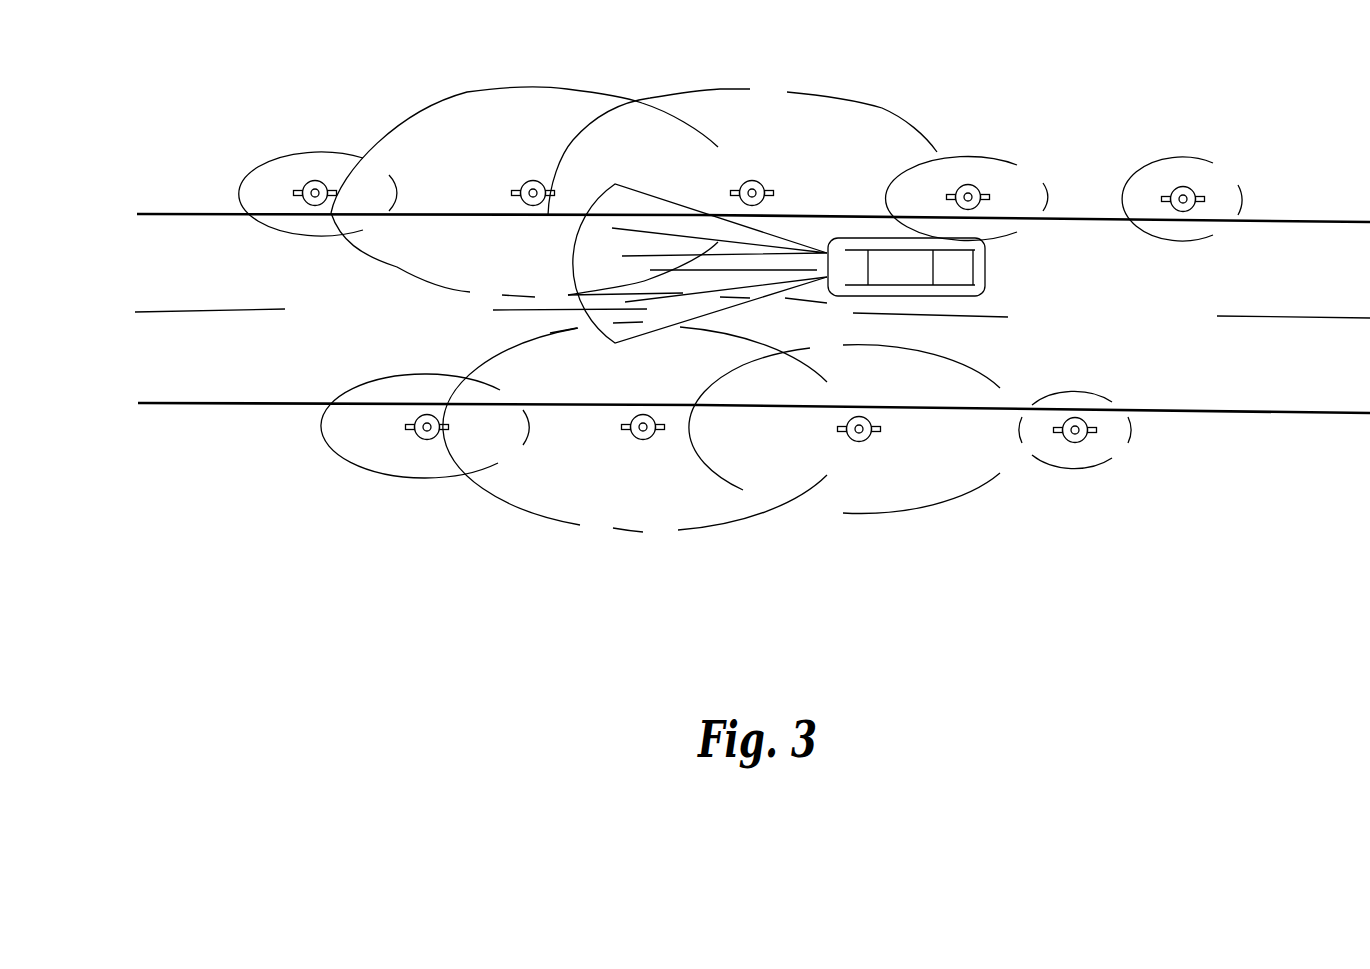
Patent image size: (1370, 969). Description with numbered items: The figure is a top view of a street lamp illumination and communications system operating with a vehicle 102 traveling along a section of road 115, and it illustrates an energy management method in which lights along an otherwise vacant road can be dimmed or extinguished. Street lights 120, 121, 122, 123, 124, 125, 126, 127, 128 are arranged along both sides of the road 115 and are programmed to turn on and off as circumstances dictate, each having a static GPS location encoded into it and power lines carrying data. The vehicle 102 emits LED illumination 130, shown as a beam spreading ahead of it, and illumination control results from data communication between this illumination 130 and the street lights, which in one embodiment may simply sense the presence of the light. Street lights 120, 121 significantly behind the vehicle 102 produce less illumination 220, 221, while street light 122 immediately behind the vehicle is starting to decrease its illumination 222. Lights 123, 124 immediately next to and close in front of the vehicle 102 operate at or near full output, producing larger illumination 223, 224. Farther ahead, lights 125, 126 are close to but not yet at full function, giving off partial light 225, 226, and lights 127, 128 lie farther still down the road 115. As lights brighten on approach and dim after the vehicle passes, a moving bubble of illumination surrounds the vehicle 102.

The vehicle 102 is at (887, 262).
The road 115 is at (1253, 373).
The street light 120 is at (1193, 182).
The street light 121 is at (1080, 442).
The street light 122 is at (978, 178).
The street light 123 is at (865, 447).
The street light 124 is at (767, 180).
The street light 125 is at (637, 443).
The street light 126 is at (528, 177).
The street light 127 is at (422, 442).
The street light 128 is at (308, 177).
The LED illumination 130 is at (735, 276).
The illumination 220 is at (1250, 195).
The illumination 221 is at (1135, 437).
The illumination 222 is at (1053, 193).
The illumination 223 is at (862, 513).
The illumination 224 is at (882, 108).
The partial light 225 is at (643, 530).
The partial light 226 is at (600, 93).